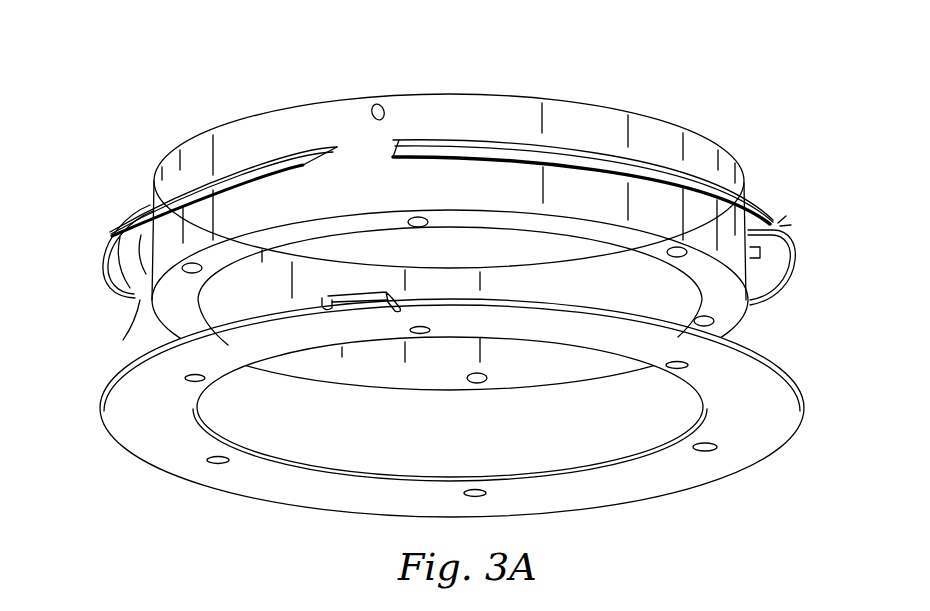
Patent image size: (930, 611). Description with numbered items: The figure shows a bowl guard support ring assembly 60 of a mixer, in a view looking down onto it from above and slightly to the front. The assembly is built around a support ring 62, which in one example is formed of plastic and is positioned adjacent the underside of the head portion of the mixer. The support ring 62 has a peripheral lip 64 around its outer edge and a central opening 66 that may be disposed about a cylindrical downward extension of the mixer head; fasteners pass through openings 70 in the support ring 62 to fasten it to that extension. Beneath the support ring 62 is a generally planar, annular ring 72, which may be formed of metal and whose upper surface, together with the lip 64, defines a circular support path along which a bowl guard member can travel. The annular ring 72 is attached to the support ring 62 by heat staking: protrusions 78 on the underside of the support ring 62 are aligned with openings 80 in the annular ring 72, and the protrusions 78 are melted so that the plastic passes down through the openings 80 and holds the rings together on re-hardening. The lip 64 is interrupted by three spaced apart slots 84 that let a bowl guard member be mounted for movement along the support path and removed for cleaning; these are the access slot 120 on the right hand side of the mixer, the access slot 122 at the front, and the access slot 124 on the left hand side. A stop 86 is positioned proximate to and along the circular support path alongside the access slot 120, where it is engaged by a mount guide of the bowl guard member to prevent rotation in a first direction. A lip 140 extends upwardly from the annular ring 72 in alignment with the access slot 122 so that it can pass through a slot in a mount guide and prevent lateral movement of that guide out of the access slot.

The bowl guard support ring assembly 60 is at (154, 106).
The support ring 62 is at (612, 112).
The peripheral lip 64 is at (110, 233).
The central opening 66 is at (463, 268).
The openings 70 is at (386, 110).
The annular ring 72 is at (139, 466).
The protrusions 78 is at (419, 228).
The openings 80 is at (222, 458).
The slots 84 is at (383, 147).
The stop 86 is at (758, 252).
The access slot 120 is at (781, 220).
The access slot 122 is at (353, 147).
The access slot 124 is at (143, 318).
The lip 140 is at (360, 312).